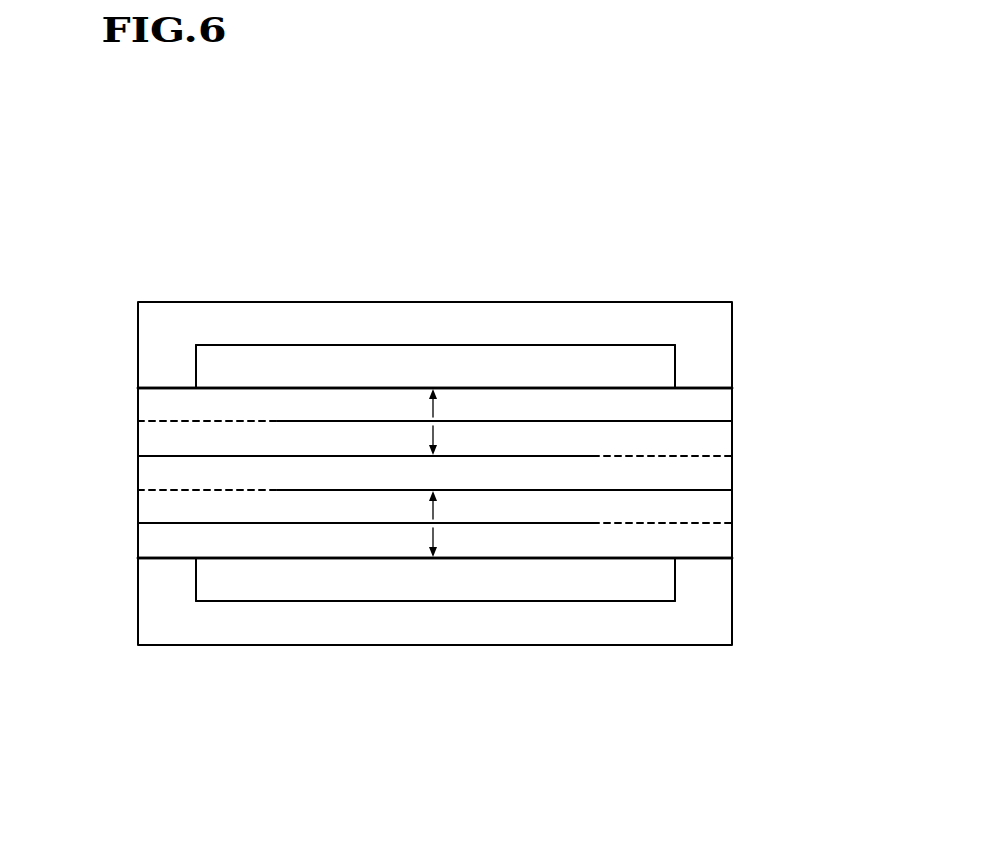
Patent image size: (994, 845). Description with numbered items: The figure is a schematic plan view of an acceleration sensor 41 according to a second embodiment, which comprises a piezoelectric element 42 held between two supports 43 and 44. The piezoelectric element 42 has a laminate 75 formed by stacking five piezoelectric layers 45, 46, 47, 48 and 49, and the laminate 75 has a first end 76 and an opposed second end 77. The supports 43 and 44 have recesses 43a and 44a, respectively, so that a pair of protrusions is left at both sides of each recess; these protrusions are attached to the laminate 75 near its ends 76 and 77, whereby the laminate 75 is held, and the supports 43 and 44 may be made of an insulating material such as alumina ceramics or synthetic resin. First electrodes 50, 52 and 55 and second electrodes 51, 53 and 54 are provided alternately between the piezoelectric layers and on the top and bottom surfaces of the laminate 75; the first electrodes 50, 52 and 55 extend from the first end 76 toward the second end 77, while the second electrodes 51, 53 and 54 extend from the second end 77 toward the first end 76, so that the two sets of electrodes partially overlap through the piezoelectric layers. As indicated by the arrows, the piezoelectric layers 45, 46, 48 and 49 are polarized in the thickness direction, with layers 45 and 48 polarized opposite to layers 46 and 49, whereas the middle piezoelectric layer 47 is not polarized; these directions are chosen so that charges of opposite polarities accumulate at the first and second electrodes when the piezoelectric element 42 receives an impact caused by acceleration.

The acceleration sensor 41 is at (173, 235).
The piezoelectric element 42 is at (296, 382).
The support 43 is at (690, 318).
The recess 43a is at (613, 368).
The support 44 is at (688, 633).
The recess 44a is at (613, 582).
The piezoelectric layer 45 is at (493, 405).
The piezoelectric layer 46 is at (541, 442).
The piezoelectric layer 47 is at (572, 474).
The piezoelectric layer 48 is at (525, 507).
The piezoelectric layer 49 is at (472, 546).
The first electrode 50 is at (693, 421).
The second electrode 51 is at (190, 456).
The first electrode 52 is at (693, 490).
The second electrode 53 is at (190, 523).
The second electrode 54 is at (357, 388).
The first electrode 55 is at (370, 558).
The laminate 75 is at (498, 224).
The first end 76 is at (740, 397).
The second end 77 is at (131, 396).